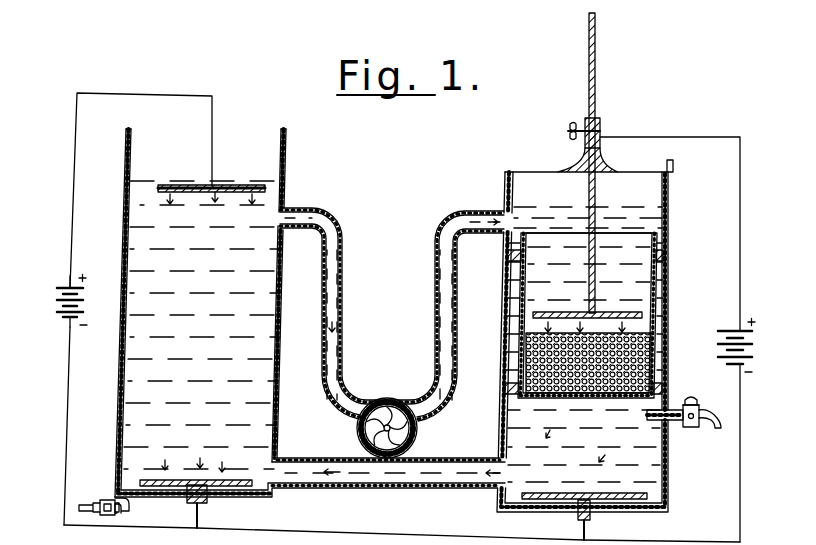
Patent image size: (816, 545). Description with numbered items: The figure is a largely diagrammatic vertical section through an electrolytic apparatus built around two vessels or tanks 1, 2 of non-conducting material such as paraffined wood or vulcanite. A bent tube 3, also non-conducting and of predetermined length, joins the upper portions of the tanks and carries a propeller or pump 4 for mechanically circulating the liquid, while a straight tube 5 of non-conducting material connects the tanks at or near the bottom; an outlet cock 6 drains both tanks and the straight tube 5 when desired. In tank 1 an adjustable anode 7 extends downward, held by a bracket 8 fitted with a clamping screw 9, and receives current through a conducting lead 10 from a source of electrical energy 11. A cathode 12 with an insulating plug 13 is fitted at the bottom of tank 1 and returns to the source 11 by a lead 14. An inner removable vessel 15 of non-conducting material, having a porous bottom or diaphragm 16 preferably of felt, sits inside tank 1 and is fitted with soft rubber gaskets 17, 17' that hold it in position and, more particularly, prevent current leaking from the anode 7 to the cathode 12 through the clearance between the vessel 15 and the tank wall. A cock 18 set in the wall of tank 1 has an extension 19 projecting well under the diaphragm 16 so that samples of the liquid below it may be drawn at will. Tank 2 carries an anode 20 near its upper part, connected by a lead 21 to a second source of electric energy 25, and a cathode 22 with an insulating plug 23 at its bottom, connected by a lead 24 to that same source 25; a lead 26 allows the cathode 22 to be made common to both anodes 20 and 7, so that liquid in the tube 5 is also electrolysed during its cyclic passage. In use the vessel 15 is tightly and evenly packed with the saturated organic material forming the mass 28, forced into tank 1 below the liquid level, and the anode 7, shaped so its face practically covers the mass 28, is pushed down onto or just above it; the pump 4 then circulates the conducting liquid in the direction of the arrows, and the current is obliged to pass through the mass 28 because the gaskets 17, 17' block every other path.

The tank 1 is at (673, 217).
The tank 2 is at (287, 180).
The bent tube 3 is at (343, 231).
The pump 4 is at (418, 438).
The straight tube 5 is at (388, 489).
The outlet cock 6 is at (118, 512).
The adjustable anode 7 is at (595, 251).
The bracket 8 is at (601, 126).
The clamping screw 9 is at (568, 131).
The conducting lead 10 is at (672, 137).
The source of electrical energy 11 is at (752, 351).
The cathode 12 is at (600, 494).
The insulating plug 13 is at (592, 515).
The lead 14 is at (740, 523).
The inner removable vessel 15 is at (673, 283).
The porous bottom or diaphragm 16 is at (556, 398).
The soft rubber gasket 17 is at (570, 261).
The soft rubber gasket 17' is at (569, 394).
The cock 18 is at (697, 426).
The extension 19 is at (656, 421).
The anode 20 is at (212, 184).
The lead 21 is at (72, 210).
The cathode 22 is at (226, 483).
The insulating plug 23 is at (210, 501).
The lead 24 is at (67, 417).
The second source of electric energy 25 is at (63, 295).
The lead 26 is at (330, 537).
The mass of organic material 28 is at (655, 372).